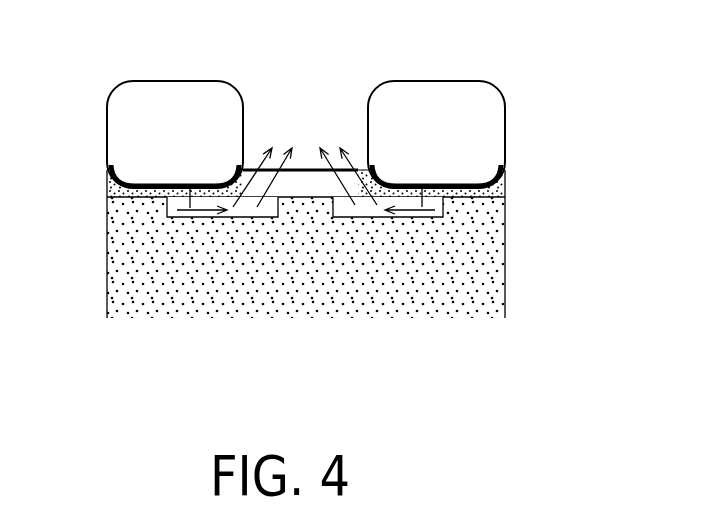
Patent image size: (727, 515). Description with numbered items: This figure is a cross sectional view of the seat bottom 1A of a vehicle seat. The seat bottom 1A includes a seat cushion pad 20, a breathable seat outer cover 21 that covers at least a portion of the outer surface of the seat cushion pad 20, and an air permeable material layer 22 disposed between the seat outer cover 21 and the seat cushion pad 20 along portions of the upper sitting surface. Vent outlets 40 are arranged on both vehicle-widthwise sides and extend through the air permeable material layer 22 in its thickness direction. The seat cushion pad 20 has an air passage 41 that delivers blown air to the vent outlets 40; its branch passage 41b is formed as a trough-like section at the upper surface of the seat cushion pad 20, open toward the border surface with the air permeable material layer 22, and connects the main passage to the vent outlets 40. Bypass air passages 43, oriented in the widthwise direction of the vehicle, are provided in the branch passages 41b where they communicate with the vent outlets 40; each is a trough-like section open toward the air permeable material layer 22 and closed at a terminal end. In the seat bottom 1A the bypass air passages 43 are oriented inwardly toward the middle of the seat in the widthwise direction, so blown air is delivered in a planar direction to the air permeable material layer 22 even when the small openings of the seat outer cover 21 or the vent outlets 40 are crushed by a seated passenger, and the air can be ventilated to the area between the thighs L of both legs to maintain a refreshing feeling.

The seat bottom 1A is at (528, 252).
The seat cushion pad 20 is at (493, 293).
The seat outer cover 21 is at (150, 176).
The air permeable material layer 22 is at (106, 190).
The vent outlet 40 is at (172, 187).
The air passage 41 is at (294, 295).
The branch passage 41b is at (167, 217).
The bypass air passage 43 is at (238, 215).
The thighs L is at (150, 80).